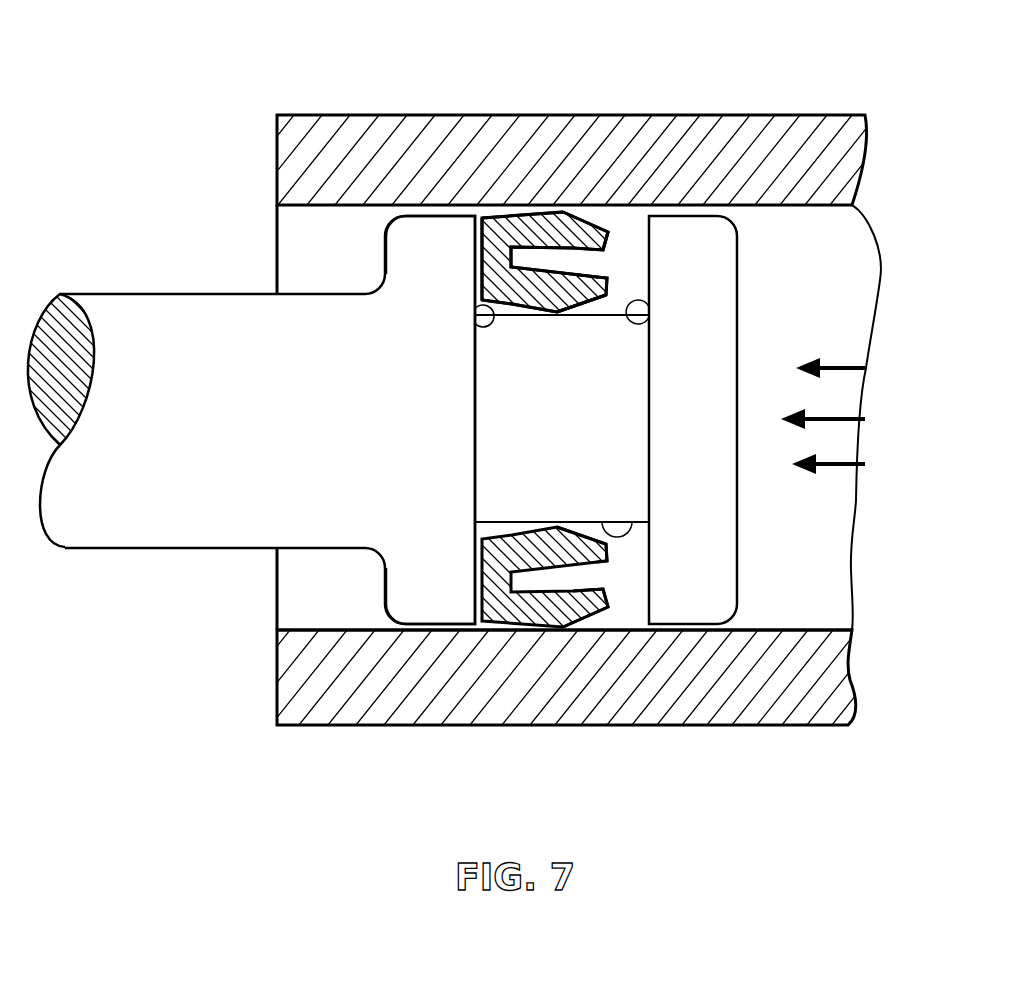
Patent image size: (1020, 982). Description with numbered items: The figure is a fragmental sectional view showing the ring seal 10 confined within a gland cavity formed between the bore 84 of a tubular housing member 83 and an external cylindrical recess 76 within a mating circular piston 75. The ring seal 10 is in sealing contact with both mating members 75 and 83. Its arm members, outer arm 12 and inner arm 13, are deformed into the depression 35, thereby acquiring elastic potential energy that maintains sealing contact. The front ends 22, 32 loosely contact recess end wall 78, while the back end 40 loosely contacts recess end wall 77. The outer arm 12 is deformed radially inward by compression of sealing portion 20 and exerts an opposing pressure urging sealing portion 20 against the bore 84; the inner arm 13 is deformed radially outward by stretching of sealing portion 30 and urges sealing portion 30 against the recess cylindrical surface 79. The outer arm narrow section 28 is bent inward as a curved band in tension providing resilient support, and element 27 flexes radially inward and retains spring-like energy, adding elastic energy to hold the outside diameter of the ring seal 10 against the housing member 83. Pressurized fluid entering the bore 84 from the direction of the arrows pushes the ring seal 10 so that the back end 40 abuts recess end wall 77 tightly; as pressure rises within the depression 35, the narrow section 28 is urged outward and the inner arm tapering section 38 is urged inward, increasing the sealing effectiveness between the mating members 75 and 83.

The ring seal 10 is at (586, 327).
The outer arm 12 is at (617, 595).
The inner arm 13 is at (612, 552).
The sealing portion 20 is at (586, 217).
The front end 22 is at (610, 239).
The element 27 is at (588, 230).
The outer arm narrow section 28 is at (533, 228).
The sealing portion 30 is at (553, 308).
The front end 32 is at (607, 282).
The depression 35 is at (587, 265).
The inner arm tapering section 38 is at (531, 296).
The back end 40 is at (483, 263).
The piston 75 is at (182, 487).
The recess 76 is at (476, 516).
The recess end wall 77 is at (482, 326).
The recess end wall 78 is at (627, 322).
The recess cylindrical surface 79 is at (630, 520).
The tubular housing member 83 is at (268, 665).
The bore 84 is at (325, 631).